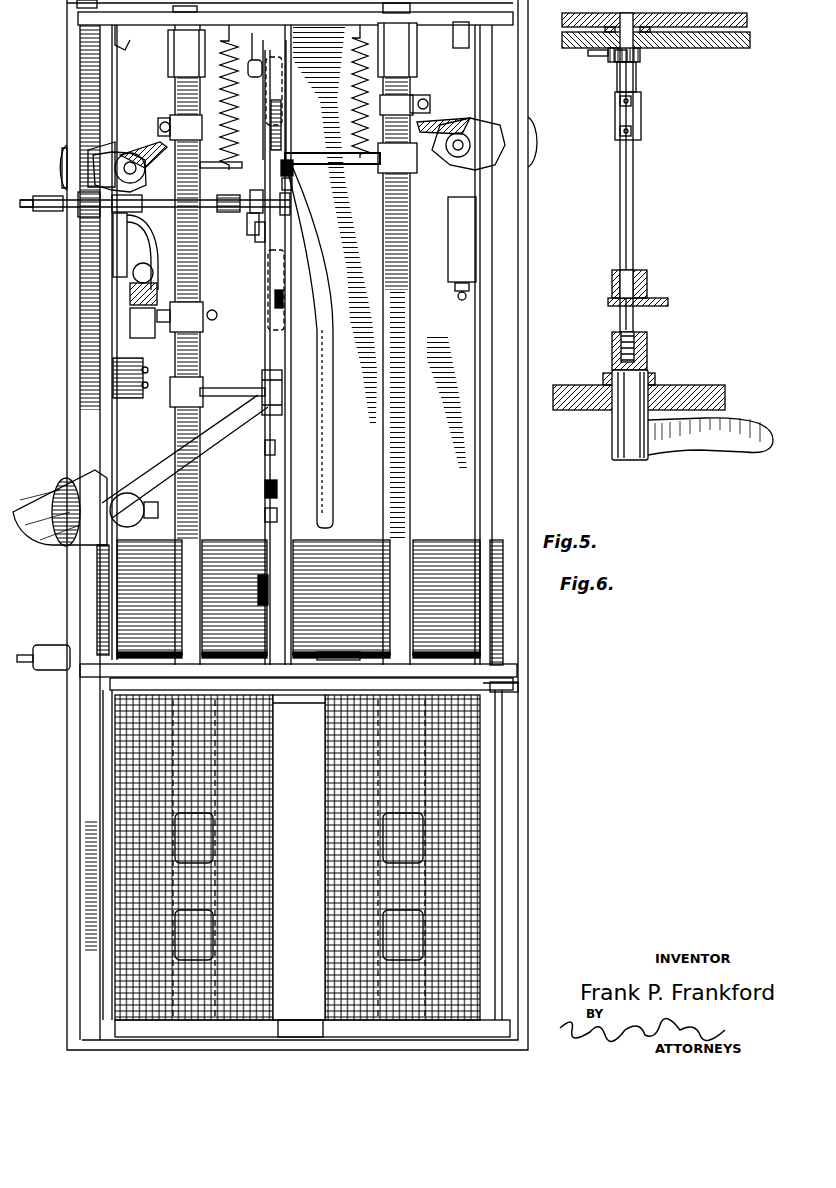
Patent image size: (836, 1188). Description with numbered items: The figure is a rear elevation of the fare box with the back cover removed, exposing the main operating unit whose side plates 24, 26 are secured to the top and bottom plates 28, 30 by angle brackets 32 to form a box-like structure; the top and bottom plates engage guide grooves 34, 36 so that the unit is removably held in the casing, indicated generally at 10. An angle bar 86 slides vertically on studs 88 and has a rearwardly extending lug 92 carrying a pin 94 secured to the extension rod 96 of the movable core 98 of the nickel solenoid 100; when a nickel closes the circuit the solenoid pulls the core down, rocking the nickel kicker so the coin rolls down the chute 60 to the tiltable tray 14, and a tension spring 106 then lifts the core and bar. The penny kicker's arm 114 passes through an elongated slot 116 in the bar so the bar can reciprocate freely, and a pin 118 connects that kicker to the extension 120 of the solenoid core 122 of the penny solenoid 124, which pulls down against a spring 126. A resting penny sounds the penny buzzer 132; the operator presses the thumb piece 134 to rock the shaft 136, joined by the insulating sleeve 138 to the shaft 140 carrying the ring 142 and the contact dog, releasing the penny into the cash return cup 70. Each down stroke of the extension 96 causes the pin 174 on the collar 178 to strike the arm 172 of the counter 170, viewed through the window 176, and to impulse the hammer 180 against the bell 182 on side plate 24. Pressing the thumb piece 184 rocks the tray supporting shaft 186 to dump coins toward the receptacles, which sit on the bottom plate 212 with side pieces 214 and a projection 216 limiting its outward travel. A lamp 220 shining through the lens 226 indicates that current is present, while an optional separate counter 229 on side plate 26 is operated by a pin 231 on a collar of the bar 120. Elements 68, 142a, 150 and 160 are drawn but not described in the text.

In FIG. 6, the base plate / frame 10 is at (541, 782).
In FIG. 5, the base plate / frame 10 is at (703, 378).
In FIG. 6, the tiltable tray 14 is at (357, 545).
In FIG. 6, the side plate 24 is at (115, 415).
In FIG. 6, the side plate 26 is at (477, 502).
In FIG. 6, the top plate 28 is at (156, 18).
In FIG. 6, the bottom plate 30 is at (500, 680).
In FIG. 6, the angle bracket 32 is at (126, 42).
In FIG. 6, the guide groove 34 is at (67, 8).
In FIG. 6, the guide groove 36 is at (512, 666).
In FIG. 6, the chute 60 is at (327, 484).
In FIG. 6, the diagonal link 68 is at (158, 458).
In FIG. 6, the cash return cup 70 is at (40, 502).
In FIG. 6, the angle bar 86 is at (266, 447).
In FIG. 6, the stud 88 is at (250, 66).
In FIG. 6, the lug 92 is at (283, 390).
In FIG. 6, the pin 94 is at (222, 388).
In FIG. 6, the extension rod 96 is at (197, 477).
In FIG. 6, the movable core 98 is at (273, 790).
In FIG. 6, the solenoid 100 is at (125, 917).
In FIG. 6, the tension spring 106 is at (233, 169).
In FIG. 6, the arm 114 is at (293, 170).
In FIG. 6, the elongated slot 116 is at (292, 184).
In FIG. 6, the pin 118 is at (300, 152).
In FIG. 6, the extension 120 is at (408, 468).
In FIG. 6, the solenoid core 122 is at (380, 772).
In FIG. 6, the solenoid 124 is at (465, 858).
In FIG. 6, the spring 126 is at (355, 102).
In FIG. 6, the penny buzzer 132 is at (453, 270).
In FIG. 6, the thumb piece 134 is at (40, 212).
In FIG. 5, the thumb piece 134 is at (733, 470).
In FIG. 6, the shaft 136 is at (165, 205).
In FIG. 5, the shaft 136 is at (630, 213).
In FIG. 6, the insulating sleeve 138 is at (228, 213).
In FIG. 5, the insulating sleeve 138 is at (642, 117).
In FIG. 6, the shaft 140 is at (250, 235).
In FIG. 5, the shaft 140 is at (637, 80).
In FIG. 6, the ring 142 is at (290, 203).
In FIG. 5, the ring 142 is at (615, 64).
In FIG. 6, the lever arm 142a is at (262, 238).
In FIG. 5, the lever arm 142a is at (612, 56).
In FIG. 6, the plate 150 is at (273, 303).
In FIG. 5, the plate 150 is at (668, 28).
In FIG. 6, the stop 160 is at (266, 488).
In FIG. 6, the counter 170 is at (95, 160).
In FIG. 6, the arm 172 is at (150, 147).
In FIG. 6, the pin 174 is at (165, 120).
In FIG. 6, the window 176 is at (62, 160).
In FIG. 6, the collar 178 is at (197, 313).
In FIG. 6, the hammer 180 is at (143, 338).
In FIG. 6, the bell 182 is at (150, 243).
In FIG. 6, the thumb piece 184 is at (33, 649).
In FIG. 6, the tray supporting shaft 186 is at (340, 660).
In FIG. 6, the bottom plate 212 is at (298, 1020).
In FIG. 6, the side piece 214 is at (497, 750).
In FIG. 6, the projection 216 is at (500, 691).
In FIG. 6, the lamp 220 is at (140, 521).
In FIG. 6, the lens 226 is at (55, 545).
In FIG. 6, the separate counter 229 is at (450, 166).
In FIG. 6, the pin 231 is at (442, 90).